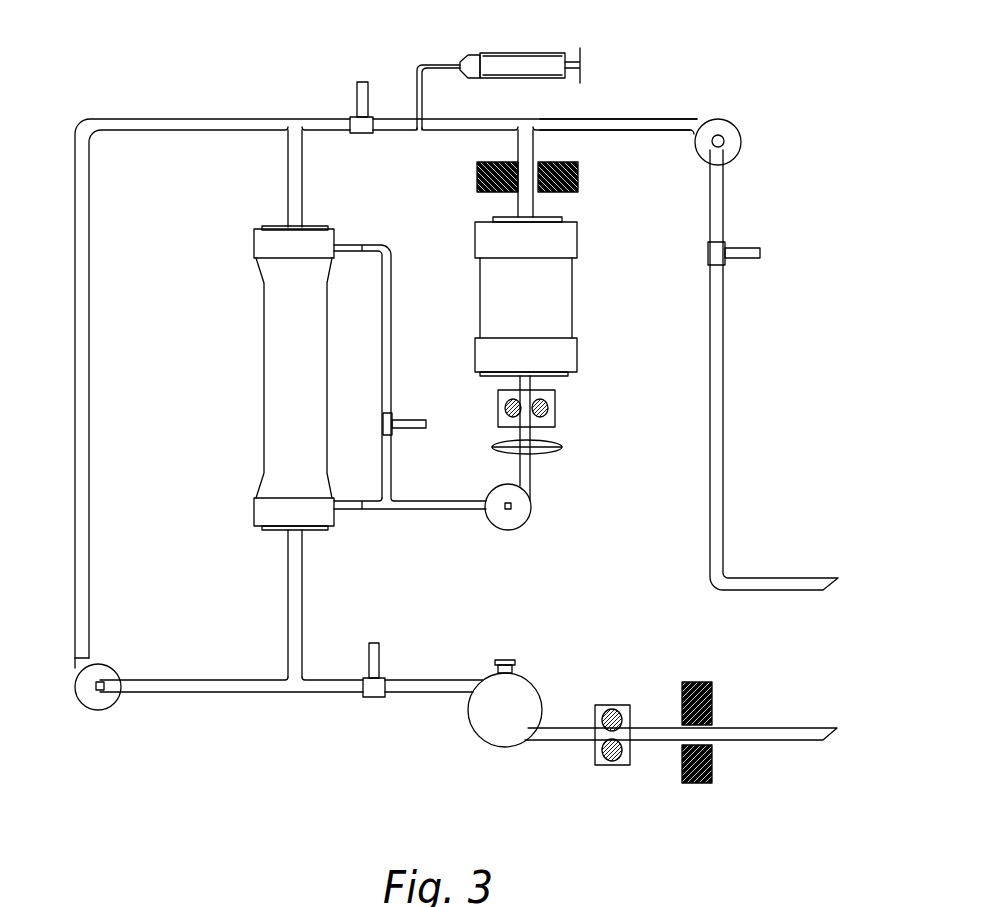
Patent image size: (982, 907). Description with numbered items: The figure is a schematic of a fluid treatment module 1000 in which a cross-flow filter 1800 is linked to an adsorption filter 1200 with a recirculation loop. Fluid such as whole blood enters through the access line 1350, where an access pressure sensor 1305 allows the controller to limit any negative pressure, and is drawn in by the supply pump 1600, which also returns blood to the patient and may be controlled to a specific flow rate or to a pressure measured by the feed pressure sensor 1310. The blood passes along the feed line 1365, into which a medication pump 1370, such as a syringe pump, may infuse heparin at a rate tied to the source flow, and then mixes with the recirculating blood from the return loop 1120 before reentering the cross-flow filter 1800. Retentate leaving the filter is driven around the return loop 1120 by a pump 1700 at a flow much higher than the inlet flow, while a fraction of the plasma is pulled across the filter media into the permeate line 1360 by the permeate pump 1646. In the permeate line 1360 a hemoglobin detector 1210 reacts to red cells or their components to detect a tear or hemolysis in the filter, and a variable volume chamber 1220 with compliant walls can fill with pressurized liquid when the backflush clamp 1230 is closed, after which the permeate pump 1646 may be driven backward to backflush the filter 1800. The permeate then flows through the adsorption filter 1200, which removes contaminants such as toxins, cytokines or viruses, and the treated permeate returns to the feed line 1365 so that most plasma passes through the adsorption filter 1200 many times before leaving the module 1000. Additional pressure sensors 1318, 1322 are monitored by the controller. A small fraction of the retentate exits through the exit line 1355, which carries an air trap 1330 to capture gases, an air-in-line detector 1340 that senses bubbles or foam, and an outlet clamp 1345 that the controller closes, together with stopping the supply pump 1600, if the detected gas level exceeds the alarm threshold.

The fluid treatment module 1000 is at (207, 765).
The return loop 1120 is at (83, 289).
The adsorption filter 1200 is at (545, 290).
The hemoglobin detector 1210 is at (565, 415).
The variable volume chamber 1220 is at (565, 445).
The backflush clamp 1230 is at (585, 183).
The access pressure sensor 1305 is at (760, 253).
The feed pressure sensor 1310 is at (367, 82).
The pressure sensor 1318 is at (417, 425).
The pressure sensor 1322 is at (375, 643).
The air trap 1330 is at (523, 690).
The air-in-line detector 1340 is at (614, 698).
The outlet clamp 1345 is at (710, 678).
The access line 1350 is at (765, 583).
The exit line 1355 is at (755, 732).
The permeate line 1360 is at (433, 514).
The feed line 1365 is at (580, 123).
The medication pump 1370 is at (596, 67).
The supply pump 1600 is at (738, 130).
The permeate pump 1646 is at (535, 507).
The pump 1700 is at (105, 672).
The cross-flow filter 1800 is at (282, 383).